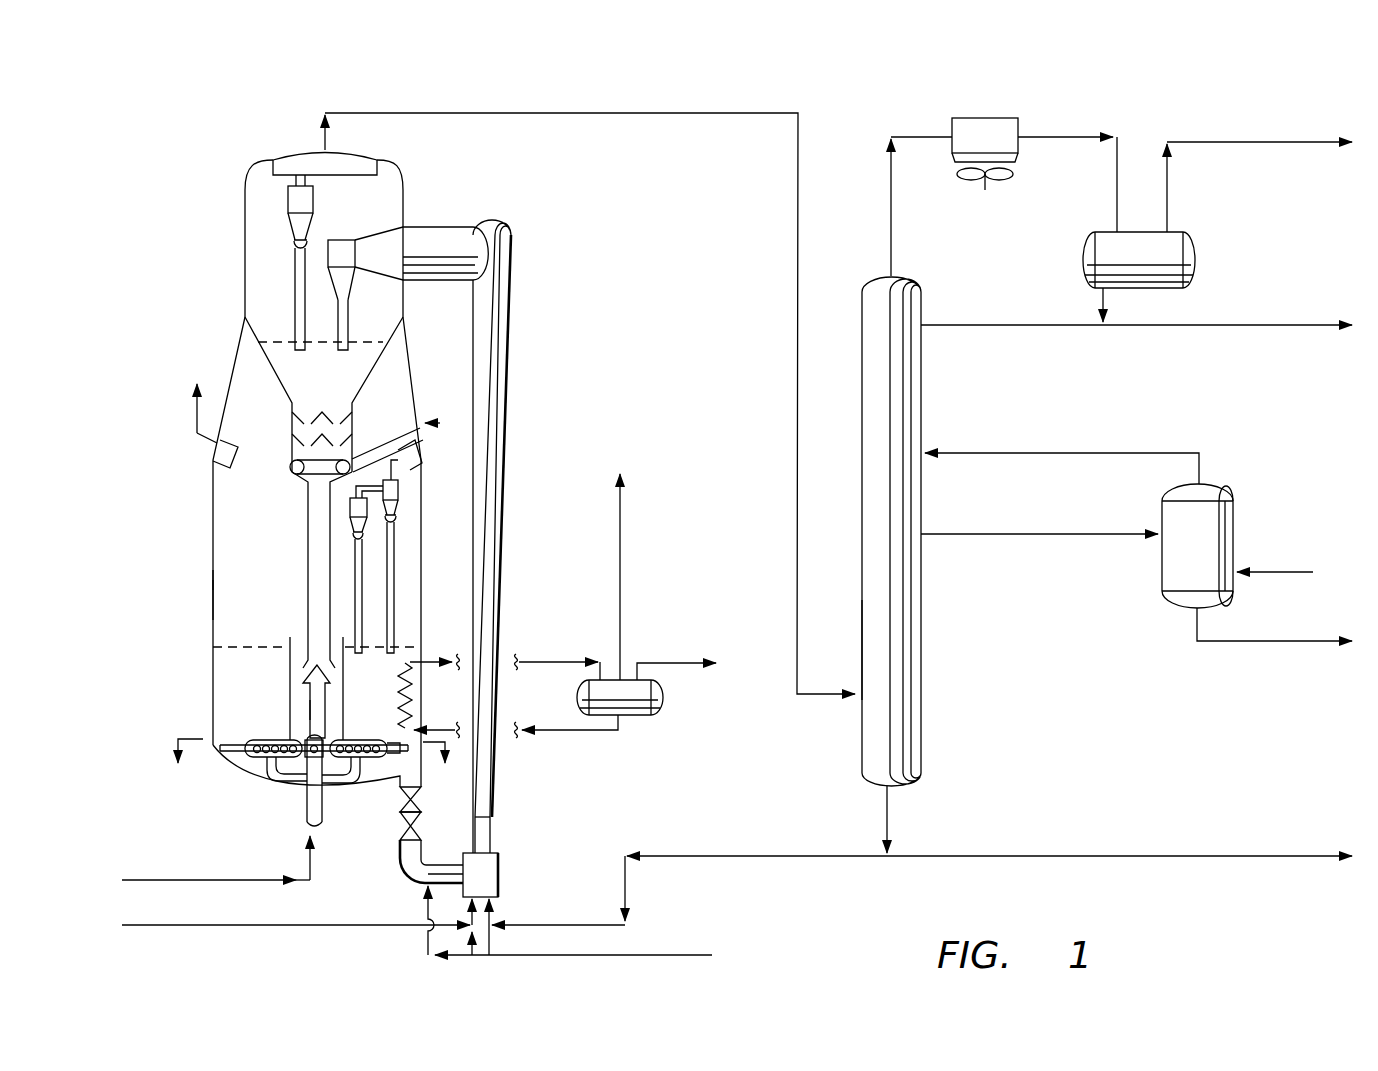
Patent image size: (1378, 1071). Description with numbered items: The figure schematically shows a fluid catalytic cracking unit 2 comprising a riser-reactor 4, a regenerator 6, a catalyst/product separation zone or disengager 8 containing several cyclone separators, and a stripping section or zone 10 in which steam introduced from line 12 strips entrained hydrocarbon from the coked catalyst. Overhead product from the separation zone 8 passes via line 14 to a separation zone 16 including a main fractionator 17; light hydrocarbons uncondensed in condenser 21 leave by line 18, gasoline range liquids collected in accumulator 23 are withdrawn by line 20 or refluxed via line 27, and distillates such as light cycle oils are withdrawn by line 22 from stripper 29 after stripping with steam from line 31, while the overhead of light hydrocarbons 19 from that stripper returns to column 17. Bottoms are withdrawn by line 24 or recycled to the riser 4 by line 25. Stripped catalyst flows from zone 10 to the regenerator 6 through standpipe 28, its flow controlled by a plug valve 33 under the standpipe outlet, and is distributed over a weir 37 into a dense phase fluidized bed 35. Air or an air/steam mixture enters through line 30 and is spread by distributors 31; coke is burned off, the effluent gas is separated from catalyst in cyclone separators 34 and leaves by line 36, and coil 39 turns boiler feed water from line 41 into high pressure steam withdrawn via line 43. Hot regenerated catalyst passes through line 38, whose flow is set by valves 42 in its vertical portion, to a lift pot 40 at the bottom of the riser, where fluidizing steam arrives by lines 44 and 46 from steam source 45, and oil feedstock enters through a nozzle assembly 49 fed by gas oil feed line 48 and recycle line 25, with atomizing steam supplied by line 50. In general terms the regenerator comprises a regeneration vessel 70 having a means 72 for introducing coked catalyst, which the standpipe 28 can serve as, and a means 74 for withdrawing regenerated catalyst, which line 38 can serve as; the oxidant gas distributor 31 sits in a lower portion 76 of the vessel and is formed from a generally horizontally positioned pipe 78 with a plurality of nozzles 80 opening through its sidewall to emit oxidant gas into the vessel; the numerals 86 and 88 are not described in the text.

The fluid catalytic cracking unit 2 is at (228, 163).
The riser-reactor 4 is at (512, 303).
The regenerator 6 is at (213, 532).
The catalyst/product separation zone or disengager 8 is at (245, 236).
The stripping section or zone 10 is at (352, 407).
The line 12 is at (440, 423).
The line 14 is at (595, 118).
The separation zone 16 is at (863, 262).
The main fractionator 17 is at (921, 390).
The line 18 is at (1274, 142).
The overhead of light hydrocarbons 19 is at (1090, 453).
The line 20 is at (1288, 324).
The condenser 21 is at (1018, 128).
The line 22 is at (1272, 641).
The accumulator 23 is at (1195, 256).
The line 24 is at (1184, 856).
The recycle line 25 is at (714, 856).
The line 27 is at (1003, 325).
The standpipe 28 is at (308, 520).
The stripper 29 is at (1238, 500).
The line 30 is at (240, 880).
The distributor 31 is at (248, 738).
The plug valve 33 is at (326, 712).
The cyclone separators 34 is at (398, 490).
The dense phase fluidized bed 35 is at (232, 680).
The line 36 is at (197, 410).
The weir 37 is at (290, 702).
The line 38 is at (400, 860).
The coil 39 is at (403, 692).
The lift pot 40 is at (500, 862).
The line 41 is at (576, 730).
The valves 42 is at (400, 836).
The line 43 is at (558, 660).
The line 44 is at (492, 912).
The steam source 45 is at (676, 955).
The line 46 is at (426, 905).
The gas oil feed line 48 is at (322, 925).
The nozzle assembly 49 is at (470, 900).
The line 50 is at (480, 942).
The regeneration vessel 70 is at (213, 600).
The means for the introduction of coked cracking catalyst 72 is at (303, 578).
The means for withdrawing regenerated cracking catalysts 74 is at (421, 792).
The lower portion 76 is at (213, 658).
The generally horizontally positioned pipe 78 is at (386, 743).
The nozzles 80 is at (236, 768).
The feed pipe 86 is at (305, 808).
The central conduit 88 is at (334, 782).